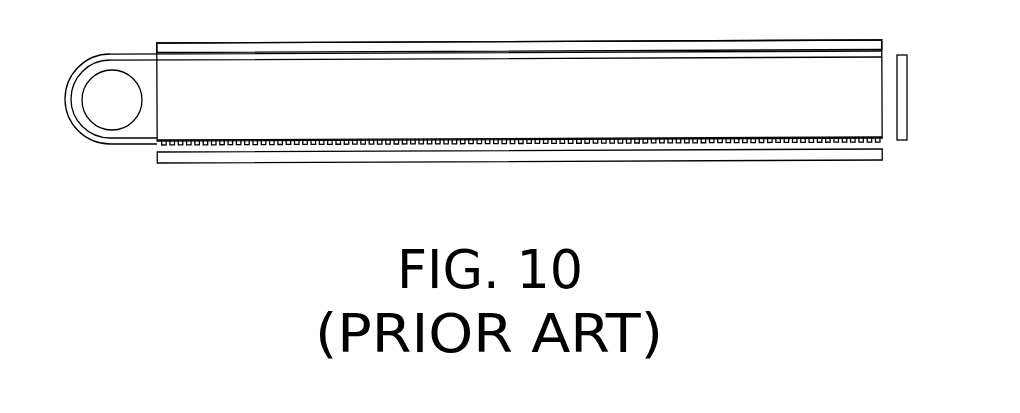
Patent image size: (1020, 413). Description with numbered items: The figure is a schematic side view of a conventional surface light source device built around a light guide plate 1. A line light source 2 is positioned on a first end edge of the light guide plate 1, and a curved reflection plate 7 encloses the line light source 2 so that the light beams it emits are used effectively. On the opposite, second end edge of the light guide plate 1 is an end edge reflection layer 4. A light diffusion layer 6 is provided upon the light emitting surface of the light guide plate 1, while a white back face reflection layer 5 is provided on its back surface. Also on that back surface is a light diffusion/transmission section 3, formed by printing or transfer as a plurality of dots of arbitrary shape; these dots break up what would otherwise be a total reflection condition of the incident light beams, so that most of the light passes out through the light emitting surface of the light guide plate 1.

The light guide plate 1 is at (802, 72).
The line light source 2 is at (100, 90).
The light diffusion/transmission section 3 is at (608, 140).
The end edge reflection layer 4 is at (900, 108).
The white back face reflection layer 5 is at (677, 155).
The light diffusion layer 6 is at (653, 47).
The curved reflection plate 7 is at (89, 143).